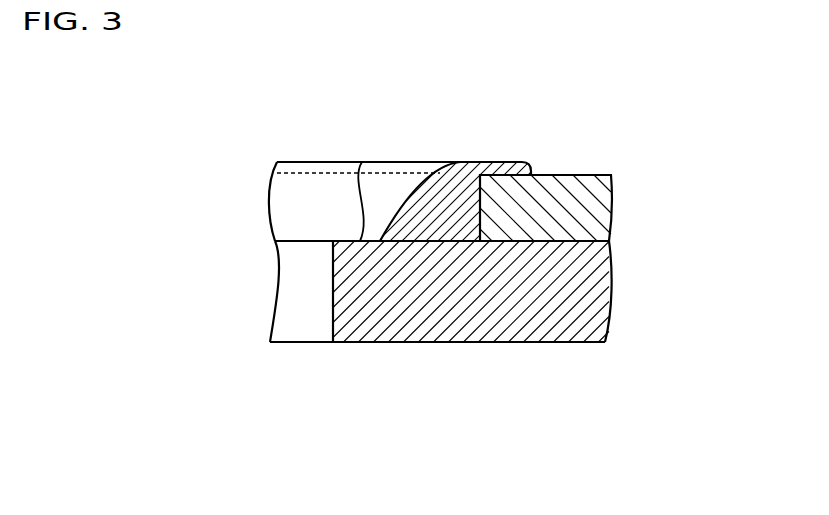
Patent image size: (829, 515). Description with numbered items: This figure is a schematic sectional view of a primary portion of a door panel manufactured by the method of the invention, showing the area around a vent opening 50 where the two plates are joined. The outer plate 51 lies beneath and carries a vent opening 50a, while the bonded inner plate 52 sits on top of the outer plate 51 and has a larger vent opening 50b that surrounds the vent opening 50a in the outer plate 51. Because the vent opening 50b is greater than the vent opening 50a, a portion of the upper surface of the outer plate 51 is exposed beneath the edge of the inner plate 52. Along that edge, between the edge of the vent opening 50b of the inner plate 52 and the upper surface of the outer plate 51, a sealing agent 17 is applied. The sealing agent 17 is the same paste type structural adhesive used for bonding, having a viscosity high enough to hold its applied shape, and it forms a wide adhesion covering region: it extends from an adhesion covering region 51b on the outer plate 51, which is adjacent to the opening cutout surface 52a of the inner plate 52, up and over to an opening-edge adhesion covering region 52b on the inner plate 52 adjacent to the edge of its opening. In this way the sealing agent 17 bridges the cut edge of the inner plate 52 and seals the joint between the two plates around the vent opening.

The lead terminal 50 is at (291, 206).
The vent opening 50a is at (305, 303).
The vent opening 50b is at (381, 222).
The sealing agent 17 is at (444, 193).
The outer plate 51 is at (583, 293).
The adhesion covering region 51b is at (436, 245).
The inner plate 52 is at (583, 199).
The opening cutout surface 52a is at (472, 187).
The opening-edge adhesion covering region 52b is at (508, 178).